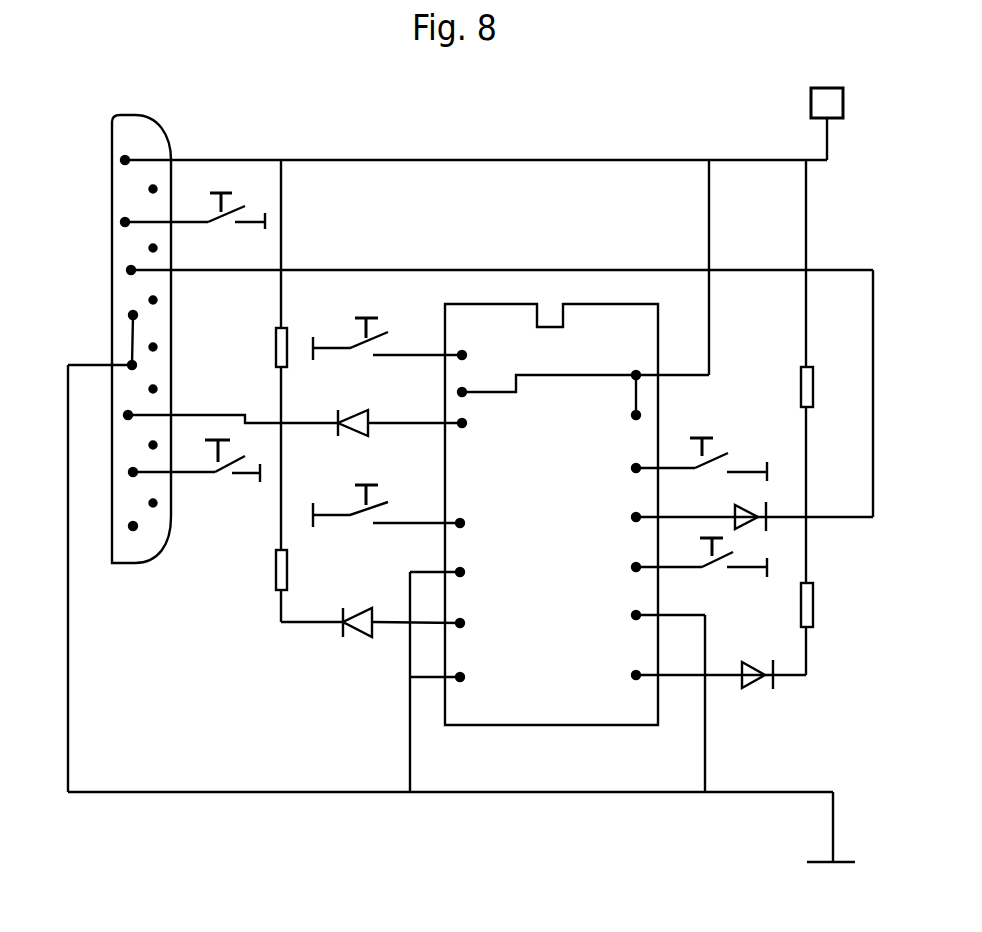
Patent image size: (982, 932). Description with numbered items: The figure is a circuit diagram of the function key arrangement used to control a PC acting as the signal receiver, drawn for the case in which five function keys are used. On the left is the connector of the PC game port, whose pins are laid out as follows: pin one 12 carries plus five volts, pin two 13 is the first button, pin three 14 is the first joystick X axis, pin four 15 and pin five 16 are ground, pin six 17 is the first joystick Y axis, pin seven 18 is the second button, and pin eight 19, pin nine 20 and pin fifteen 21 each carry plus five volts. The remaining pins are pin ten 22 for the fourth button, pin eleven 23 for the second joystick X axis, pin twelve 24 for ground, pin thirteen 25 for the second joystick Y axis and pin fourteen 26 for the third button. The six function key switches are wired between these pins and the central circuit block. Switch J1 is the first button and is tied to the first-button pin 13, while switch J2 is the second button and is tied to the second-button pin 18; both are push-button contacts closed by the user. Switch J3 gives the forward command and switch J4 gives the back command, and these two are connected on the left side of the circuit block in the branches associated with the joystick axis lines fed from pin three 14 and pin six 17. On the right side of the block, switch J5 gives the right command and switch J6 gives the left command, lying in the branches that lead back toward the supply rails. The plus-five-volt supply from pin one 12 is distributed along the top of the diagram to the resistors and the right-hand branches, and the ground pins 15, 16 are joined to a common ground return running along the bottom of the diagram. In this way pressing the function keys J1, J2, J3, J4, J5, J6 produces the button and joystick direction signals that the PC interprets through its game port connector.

The pin 1 (+5 V) 12 is at (450, 258).
The pin 2 (Button 1) 13 is at (391, 307).
The pin 3 (Joystick X1) 14 is at (473, 346).
The pin 4 (GND) 15 is at (285, 419).
The pin 5 (GND) 16 is at (282, 458).
The pin 6 (Joystick Y1) 17 is at (285, 519).
The pin 7 (Button 2) 18 is at (285, 574).
The pin 8 (+5 V) 19 is at (439, 600).
The pin 9 (+5 V) 20 is at (428, 559).
The pin 15 (+5 V) 21 is at (426, 506).
The pin 10 (Button 4) 22 is at (512, 453).
The pin 11 (Joystick X2) 23 is at (423, 407).
The pin 12 (GND) 24 is at (395, 357).
The pin 13 (Joystick Y2) 25 is at (397, 307).
The pin 14 (Button 3) 26 is at (174, 189).
The Button 1 J1 is at (250, 210).
The Button 2 J2 is at (240, 482).
The forward key J3 is at (338, 347).
The back key J4 is at (340, 518).
The right key J5 is at (737, 568).
The left key J6 is at (746, 472).